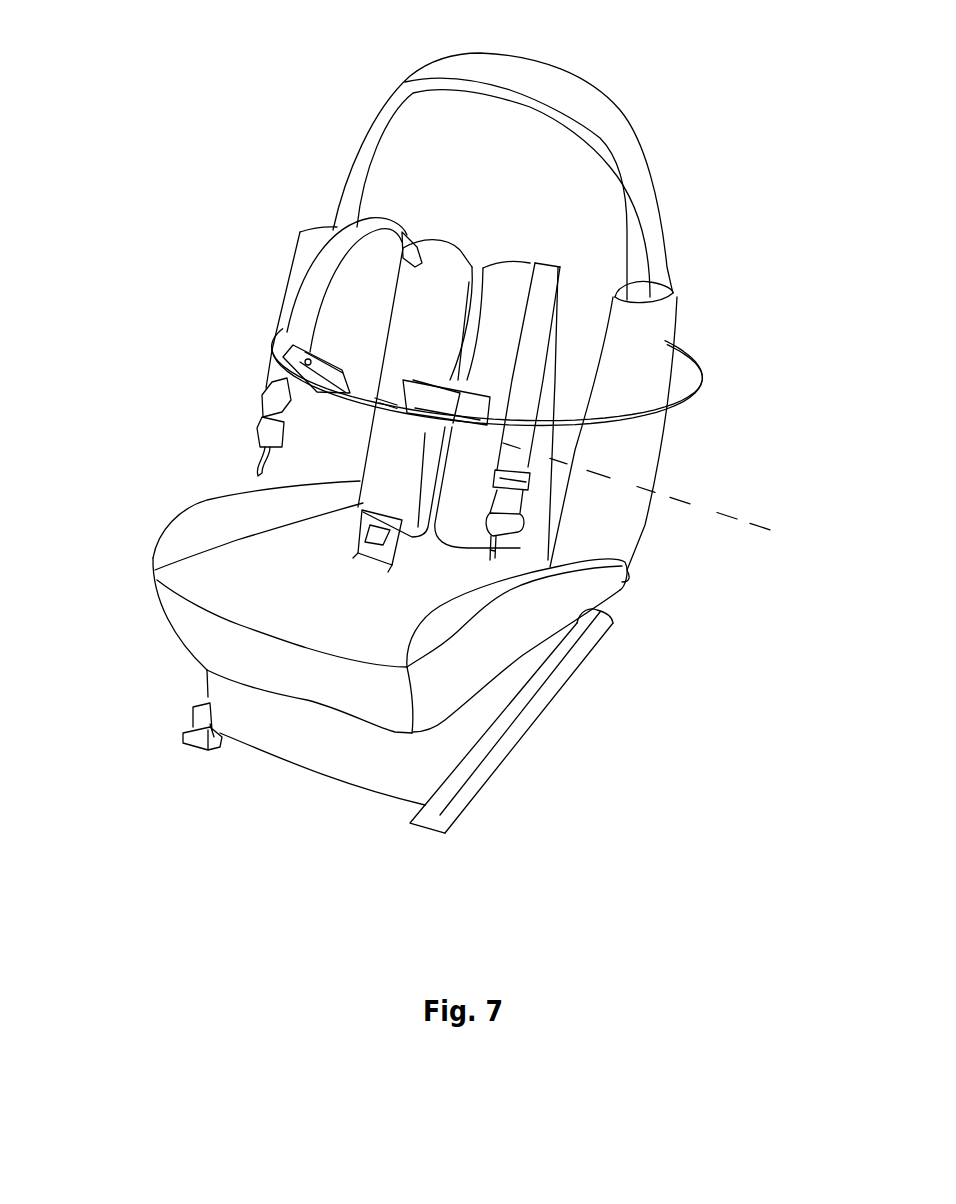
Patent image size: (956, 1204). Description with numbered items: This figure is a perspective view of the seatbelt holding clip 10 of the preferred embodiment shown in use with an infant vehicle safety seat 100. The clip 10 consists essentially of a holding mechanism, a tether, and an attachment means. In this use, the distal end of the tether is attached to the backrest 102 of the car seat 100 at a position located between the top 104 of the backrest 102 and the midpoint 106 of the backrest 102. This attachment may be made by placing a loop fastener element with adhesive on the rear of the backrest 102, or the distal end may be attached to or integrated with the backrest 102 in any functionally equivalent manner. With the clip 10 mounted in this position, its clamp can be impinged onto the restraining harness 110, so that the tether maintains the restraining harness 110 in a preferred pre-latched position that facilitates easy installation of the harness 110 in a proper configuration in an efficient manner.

The seatbelt holding clip 10 is at (692, 412).
The infant vehicle safety seat 100 is at (283, 233).
The backrest 102 is at (532, 193).
The top of the backrest 104 is at (532, 80).
The midpoint of the backrest 106 is at (777, 532).
The restraining harness 110 is at (327, 265).